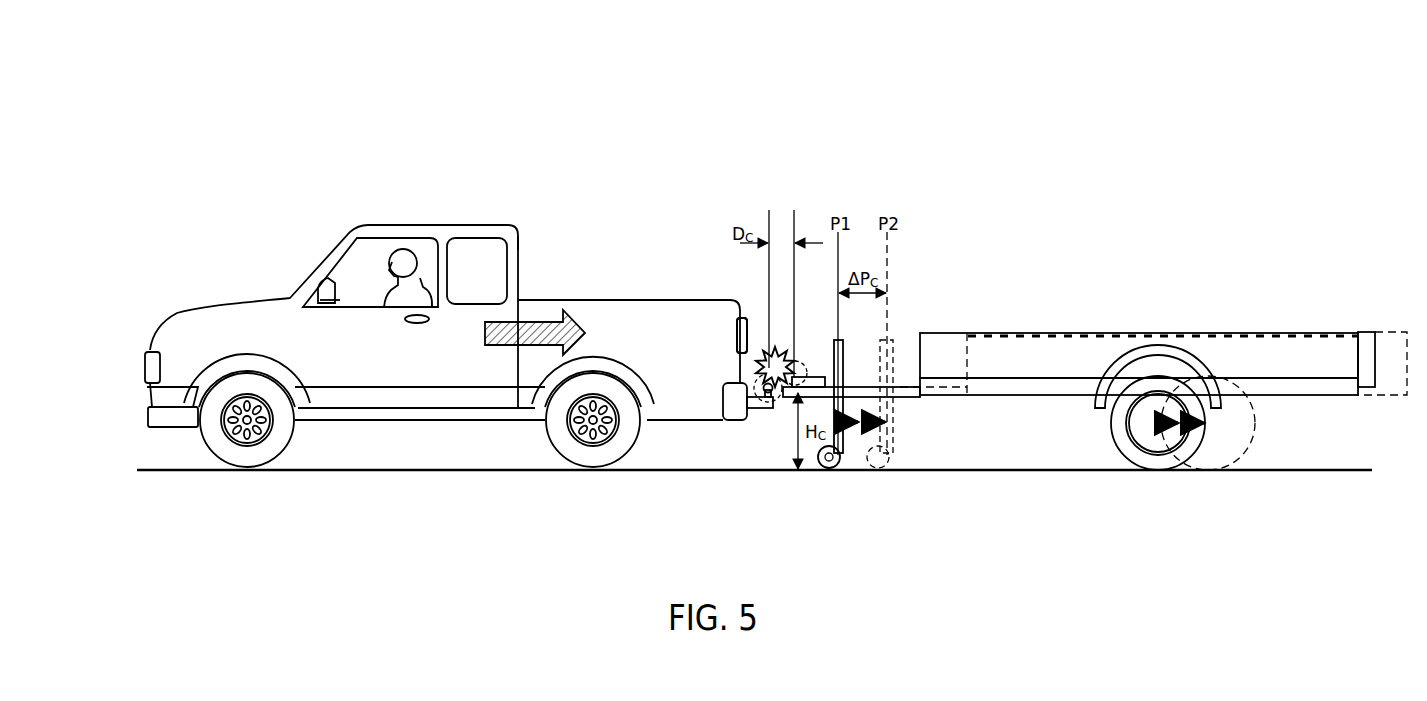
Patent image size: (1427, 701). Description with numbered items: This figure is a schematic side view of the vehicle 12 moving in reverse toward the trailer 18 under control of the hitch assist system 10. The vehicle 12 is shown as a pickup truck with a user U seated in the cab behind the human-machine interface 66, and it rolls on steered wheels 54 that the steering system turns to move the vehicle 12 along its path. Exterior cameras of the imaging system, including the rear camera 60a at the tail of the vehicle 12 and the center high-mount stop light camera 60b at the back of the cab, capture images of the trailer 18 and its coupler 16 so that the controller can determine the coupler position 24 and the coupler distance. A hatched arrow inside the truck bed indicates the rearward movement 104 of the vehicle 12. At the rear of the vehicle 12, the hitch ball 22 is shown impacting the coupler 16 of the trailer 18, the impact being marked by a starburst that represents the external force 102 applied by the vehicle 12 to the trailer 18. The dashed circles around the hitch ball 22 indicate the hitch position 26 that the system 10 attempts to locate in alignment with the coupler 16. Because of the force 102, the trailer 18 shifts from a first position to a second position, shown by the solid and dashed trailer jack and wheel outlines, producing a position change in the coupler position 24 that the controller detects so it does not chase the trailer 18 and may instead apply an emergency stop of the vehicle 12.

The hitch assist system 10 is at (395, 75).
The vehicle 12 is at (252, 310).
The coupler 16 is at (793, 393).
The trailer 18 is at (940, 333).
The hitch ball 22 is at (764, 388).
The coupler position 24 is at (802, 375).
The hitch position 26 is at (757, 380).
The steered wheels 54 is at (218, 443).
The rear camera 60a is at (742, 318).
The center high-mount stop light camera 60b is at (518, 240).
The human-machine interface 66 is at (351, 278).
The external force 102 is at (770, 352).
The rearward movement 104 is at (540, 322).
The user U is at (397, 271).